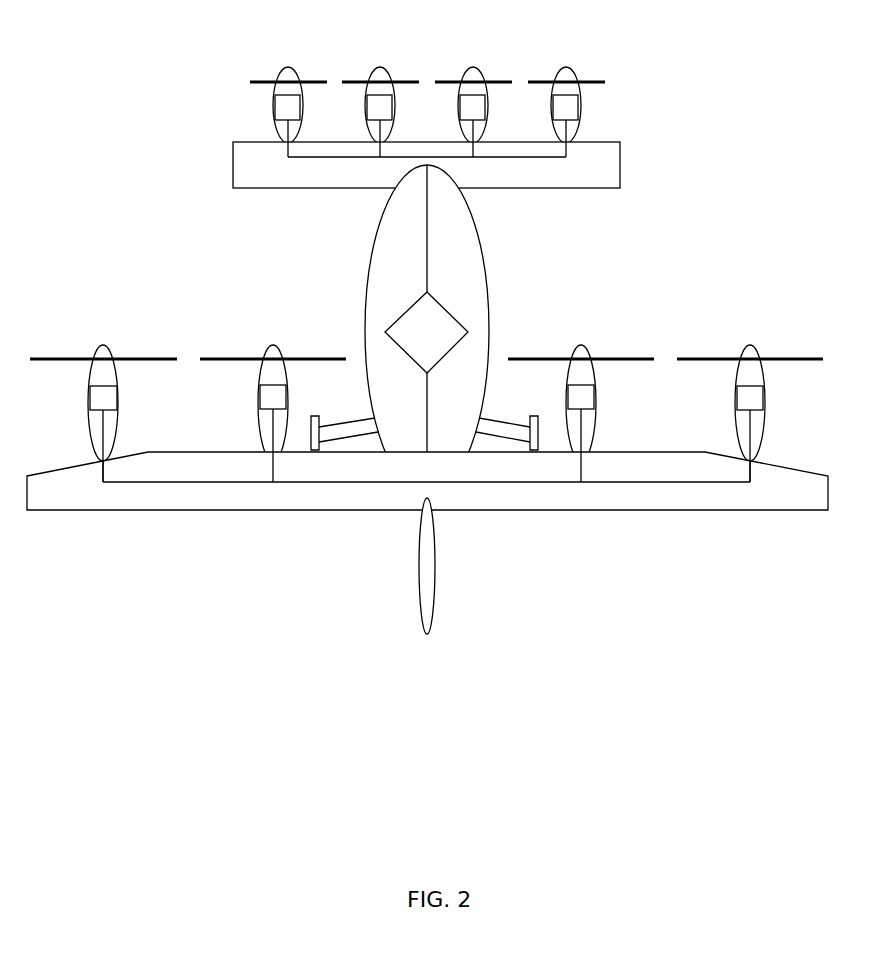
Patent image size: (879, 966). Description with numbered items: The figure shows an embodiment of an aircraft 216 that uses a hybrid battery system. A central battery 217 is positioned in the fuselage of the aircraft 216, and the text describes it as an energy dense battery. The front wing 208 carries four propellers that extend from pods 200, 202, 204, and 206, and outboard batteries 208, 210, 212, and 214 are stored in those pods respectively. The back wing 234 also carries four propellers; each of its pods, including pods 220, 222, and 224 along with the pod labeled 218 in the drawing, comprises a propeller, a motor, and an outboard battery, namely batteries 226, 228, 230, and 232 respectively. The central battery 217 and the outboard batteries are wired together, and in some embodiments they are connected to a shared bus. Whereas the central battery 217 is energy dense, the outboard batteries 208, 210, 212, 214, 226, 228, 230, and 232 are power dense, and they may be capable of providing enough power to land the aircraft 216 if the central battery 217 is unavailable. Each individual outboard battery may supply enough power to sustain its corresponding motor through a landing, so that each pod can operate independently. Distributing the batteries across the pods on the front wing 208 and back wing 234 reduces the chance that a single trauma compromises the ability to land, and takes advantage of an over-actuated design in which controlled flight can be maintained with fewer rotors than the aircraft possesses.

The pod 200 is at (288, 67).
The pod 202 is at (380, 67).
The pod 204 is at (473, 67).
The pod 206 is at (566, 67).
The front wing 208 is at (233, 172).
The outboard battery 210 is at (367, 109).
The outboard battery 212 is at (460, 109).
The outboard battery 214 is at (553, 109).
The aircraft 216 is at (366, 275).
The central battery 217 is at (385, 332).
The lower rotor assembly 218 is at (103, 344).
The pod 220 is at (273, 344).
The pod 222 is at (581, 344).
The pod 224 is at (750, 344).
The outboard battery 226 is at (90, 395).
The outboard battery 228 is at (260, 396).
The outboard battery 230 is at (568, 396).
The outboard battery 232 is at (736, 396).
The back wing 234 is at (628, 513).